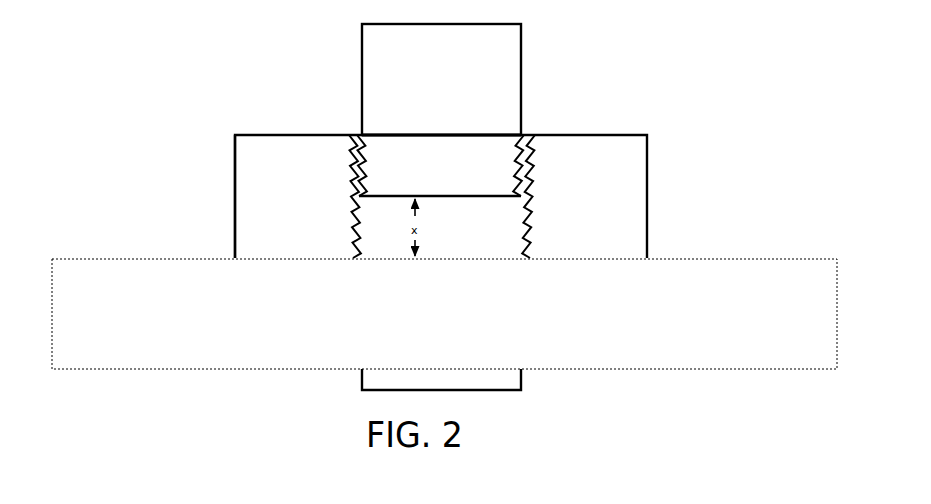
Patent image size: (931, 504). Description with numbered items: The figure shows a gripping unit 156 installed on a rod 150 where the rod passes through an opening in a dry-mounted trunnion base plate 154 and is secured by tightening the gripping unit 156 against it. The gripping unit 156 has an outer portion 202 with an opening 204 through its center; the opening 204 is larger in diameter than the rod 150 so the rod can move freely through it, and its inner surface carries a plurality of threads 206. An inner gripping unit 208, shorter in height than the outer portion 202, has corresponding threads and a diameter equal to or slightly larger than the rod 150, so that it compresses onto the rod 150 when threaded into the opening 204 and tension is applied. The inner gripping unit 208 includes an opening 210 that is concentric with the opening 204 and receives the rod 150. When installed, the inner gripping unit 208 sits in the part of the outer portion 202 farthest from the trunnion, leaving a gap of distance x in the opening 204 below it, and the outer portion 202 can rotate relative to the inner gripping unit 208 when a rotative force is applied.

The rod 150 is at (360, 42).
The trunnion base plate 154 is at (745, 256).
The gripping unit 156 is at (184, 127).
The outer portion 202 is at (233, 233).
The opening 204 is at (466, 128).
The threads 206 is at (346, 167).
The inner gripping unit 208 is at (476, 185).
The opening 210 is at (432, 129).